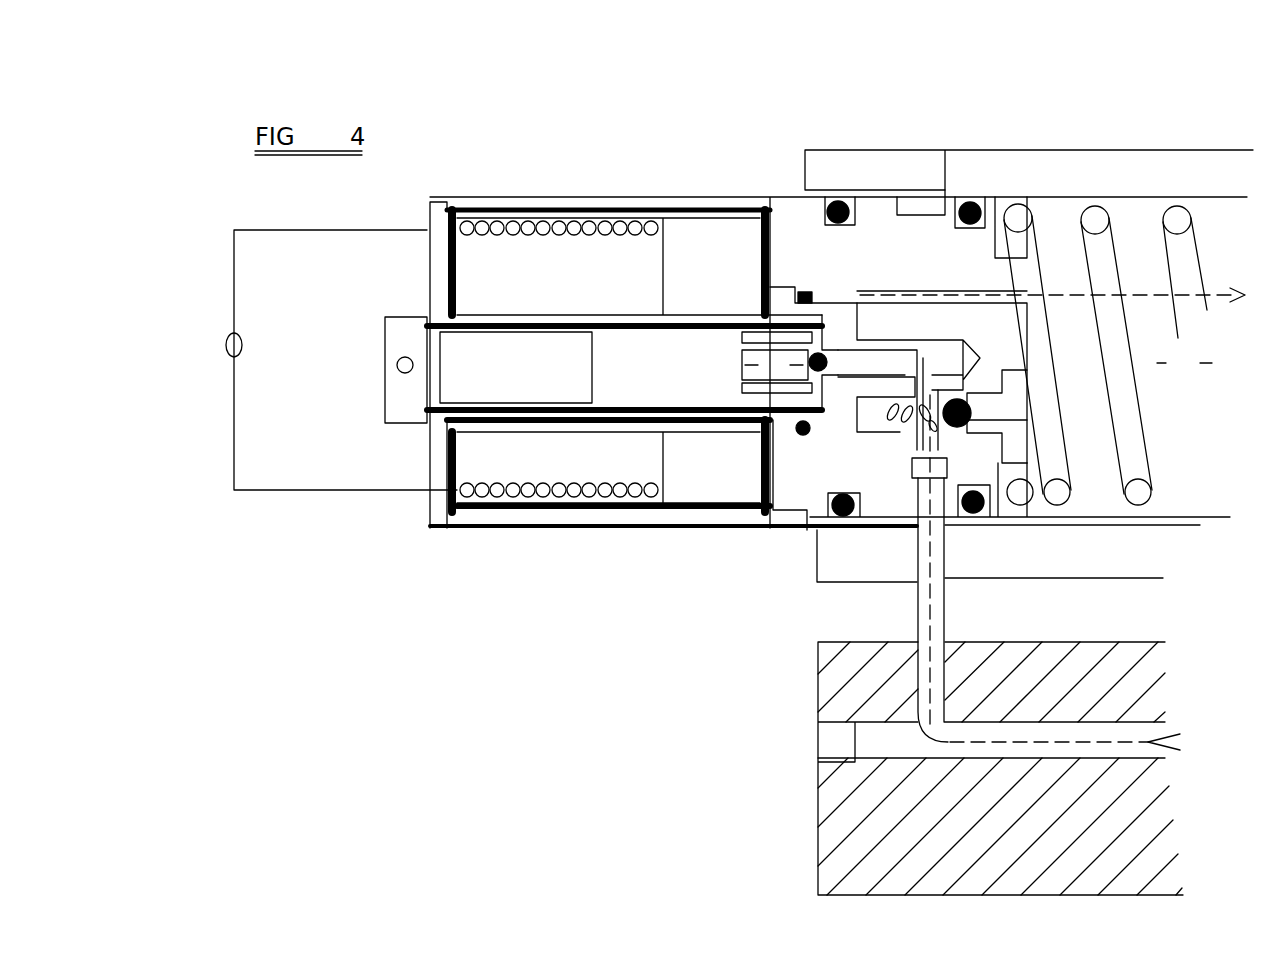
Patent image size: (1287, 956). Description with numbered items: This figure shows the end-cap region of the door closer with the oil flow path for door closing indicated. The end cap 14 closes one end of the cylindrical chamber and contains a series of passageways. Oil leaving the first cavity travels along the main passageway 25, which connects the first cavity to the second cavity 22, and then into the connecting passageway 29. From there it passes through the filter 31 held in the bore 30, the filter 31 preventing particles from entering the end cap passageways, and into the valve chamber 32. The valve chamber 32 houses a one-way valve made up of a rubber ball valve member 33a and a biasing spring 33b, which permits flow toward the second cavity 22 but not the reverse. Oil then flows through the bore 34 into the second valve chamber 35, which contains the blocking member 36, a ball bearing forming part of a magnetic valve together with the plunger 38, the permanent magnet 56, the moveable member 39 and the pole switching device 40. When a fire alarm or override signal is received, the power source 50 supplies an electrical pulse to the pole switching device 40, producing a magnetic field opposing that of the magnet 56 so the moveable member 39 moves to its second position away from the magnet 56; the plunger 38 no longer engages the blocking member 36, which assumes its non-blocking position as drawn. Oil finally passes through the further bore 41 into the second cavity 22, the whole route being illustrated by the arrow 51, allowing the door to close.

The end cap 14 is at (793, 225).
The second cavity 22 is at (1184, 364).
The passageway 25 is at (1086, 748).
The connecting passageway 29 is at (947, 618).
The bore 30 is at (905, 425).
The filter 31 is at (920, 480).
The valve chamber 32 is at (893, 418).
The valve member 33a is at (970, 413).
The spring 33b is at (990, 445).
The bore 34 is at (903, 357).
The second valve chamber 35 is at (816, 375).
The blocking member 36 is at (795, 416).
The plunger 38 is at (784, 365).
The moveable member 39 is at (565, 378).
The pole switching device 40 is at (455, 203).
The further bore 41 is at (905, 297).
The power source 50 is at (204, 385).
The arrow 51 is at (1206, 266).
The permanent magnet 56 is at (705, 282).